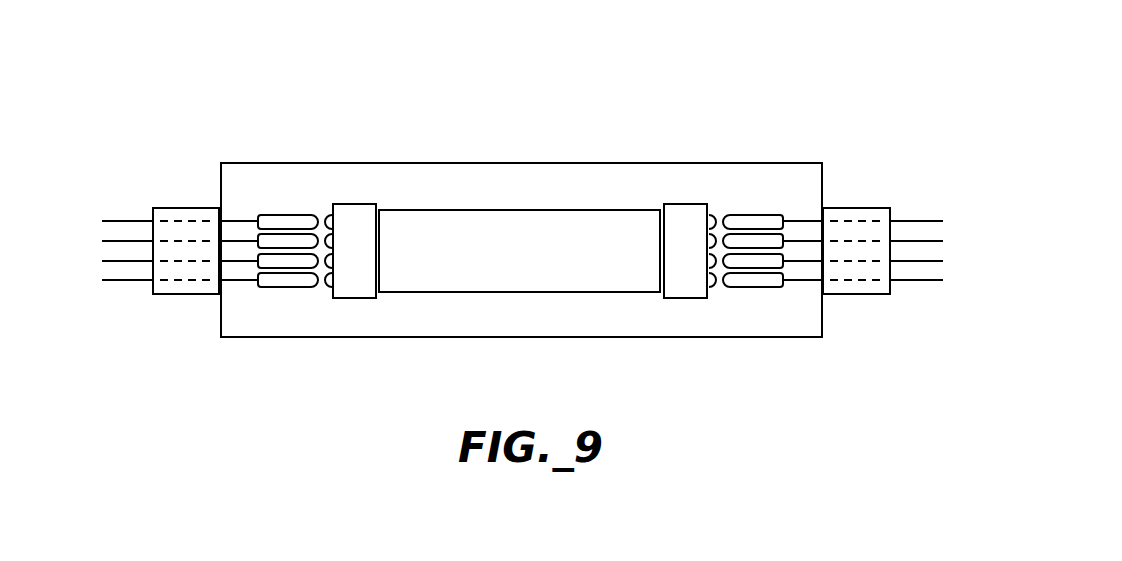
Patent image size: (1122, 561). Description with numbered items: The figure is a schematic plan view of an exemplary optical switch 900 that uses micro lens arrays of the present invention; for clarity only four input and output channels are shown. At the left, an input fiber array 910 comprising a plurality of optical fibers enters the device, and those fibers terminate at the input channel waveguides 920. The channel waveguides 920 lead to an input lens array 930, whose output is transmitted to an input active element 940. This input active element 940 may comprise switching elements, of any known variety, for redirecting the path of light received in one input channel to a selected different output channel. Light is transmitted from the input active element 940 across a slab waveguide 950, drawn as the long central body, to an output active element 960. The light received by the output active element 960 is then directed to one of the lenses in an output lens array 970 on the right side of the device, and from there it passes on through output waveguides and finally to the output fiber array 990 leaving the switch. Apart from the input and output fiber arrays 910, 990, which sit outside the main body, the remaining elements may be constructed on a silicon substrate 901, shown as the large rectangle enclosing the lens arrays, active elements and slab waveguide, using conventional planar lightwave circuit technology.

The optical switch 900 is at (783, 91).
The silicon substrate 901 is at (523, 182).
The input fiber array 910 is at (178, 206).
The input channel waveguides 920 is at (243, 219).
The input lens array 930 is at (277, 297).
The input active element 940 is at (362, 222).
The slab waveguide 950 is at (528, 273).
The output active element 960 is at (683, 220).
The output lens array 970 is at (767, 298).
The output fiber array 990 is at (858, 206).